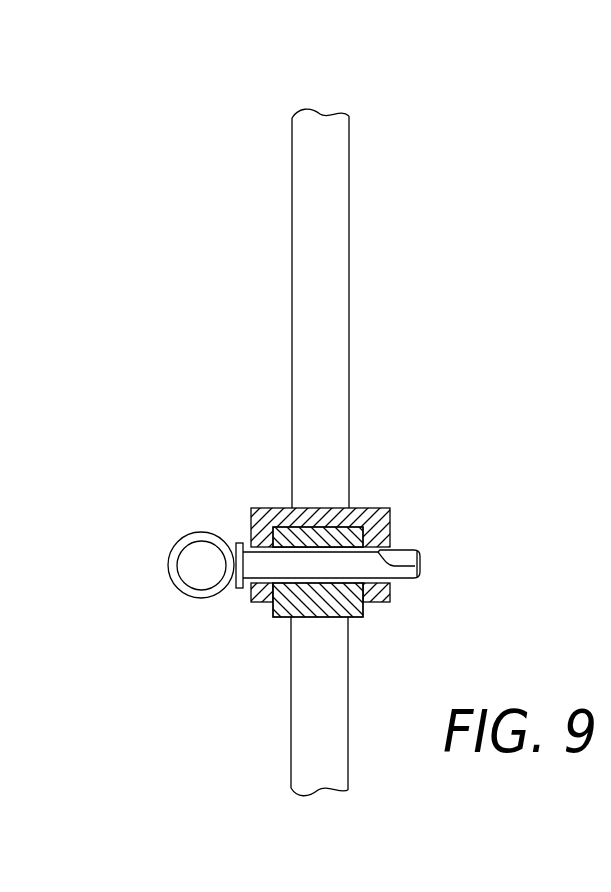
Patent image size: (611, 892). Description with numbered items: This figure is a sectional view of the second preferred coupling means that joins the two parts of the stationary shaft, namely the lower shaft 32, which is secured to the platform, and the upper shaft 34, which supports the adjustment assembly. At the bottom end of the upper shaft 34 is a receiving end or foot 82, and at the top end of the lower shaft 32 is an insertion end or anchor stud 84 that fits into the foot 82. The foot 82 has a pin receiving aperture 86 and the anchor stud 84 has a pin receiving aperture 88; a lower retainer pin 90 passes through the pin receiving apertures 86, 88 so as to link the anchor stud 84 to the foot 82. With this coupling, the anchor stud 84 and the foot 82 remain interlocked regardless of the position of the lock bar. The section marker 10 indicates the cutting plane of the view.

The section line 10- 10 is at (322, 110).
The lower shaft 32 is at (290, 695).
The upper shaft 34 is at (349, 277).
The foot 82 is at (376, 513).
The anchor stud 84 is at (363, 608).
The pin receiving aperture 86 is at (420, 568).
The pin receiving aperture 88 is at (305, 550).
The lower retainer pin 90 is at (238, 542).